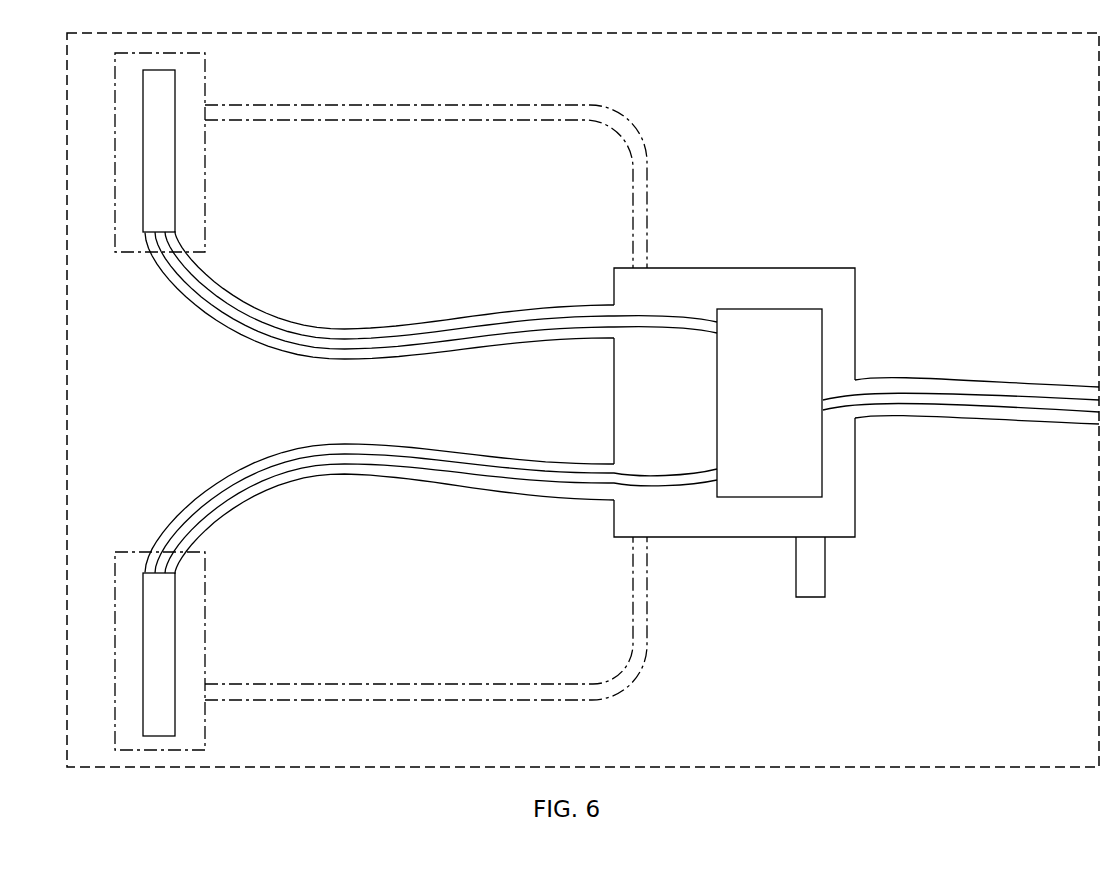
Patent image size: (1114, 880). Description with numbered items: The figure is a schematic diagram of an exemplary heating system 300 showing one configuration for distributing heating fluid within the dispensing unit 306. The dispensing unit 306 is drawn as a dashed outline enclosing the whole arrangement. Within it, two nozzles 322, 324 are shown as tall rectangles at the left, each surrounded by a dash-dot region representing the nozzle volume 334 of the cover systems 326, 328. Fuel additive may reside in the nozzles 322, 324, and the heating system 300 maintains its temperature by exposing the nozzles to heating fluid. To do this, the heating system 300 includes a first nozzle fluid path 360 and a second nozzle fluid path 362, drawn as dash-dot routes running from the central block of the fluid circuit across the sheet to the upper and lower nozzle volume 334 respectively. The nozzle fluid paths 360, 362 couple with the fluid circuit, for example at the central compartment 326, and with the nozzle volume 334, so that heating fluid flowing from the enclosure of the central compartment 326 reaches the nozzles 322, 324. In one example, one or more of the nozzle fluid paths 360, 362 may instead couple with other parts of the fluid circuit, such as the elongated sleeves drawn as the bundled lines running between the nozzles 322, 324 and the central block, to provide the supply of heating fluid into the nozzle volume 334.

The heating system 300 is at (925, 160).
The dispensing unit 306 is at (1042, 748).
The nozzle 322 is at (176, 205).
The nozzle 324 is at (176, 636).
The cover system 326 is at (205, 220).
The cover system 328 is at (205, 672).
The nozzle volume 334 is at (193, 100).
The first nozzle fluid path 360 is at (478, 119).
The second nozzle fluid path 362 is at (423, 685).